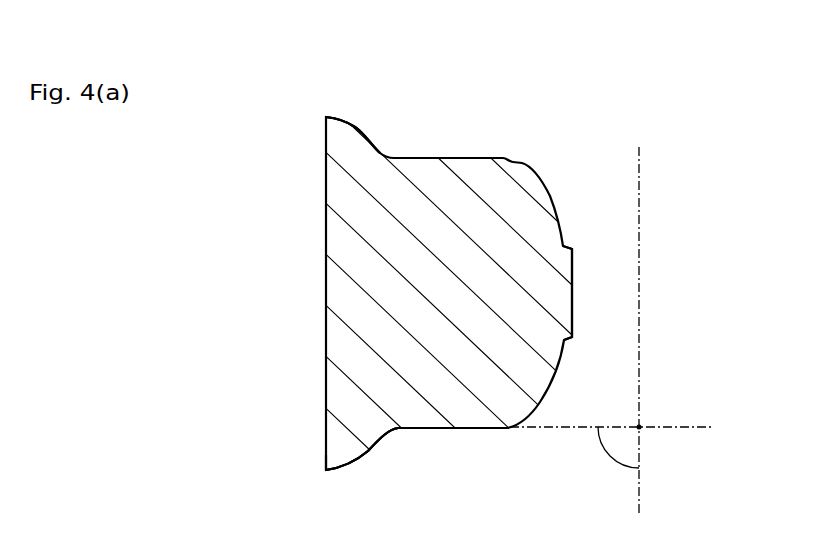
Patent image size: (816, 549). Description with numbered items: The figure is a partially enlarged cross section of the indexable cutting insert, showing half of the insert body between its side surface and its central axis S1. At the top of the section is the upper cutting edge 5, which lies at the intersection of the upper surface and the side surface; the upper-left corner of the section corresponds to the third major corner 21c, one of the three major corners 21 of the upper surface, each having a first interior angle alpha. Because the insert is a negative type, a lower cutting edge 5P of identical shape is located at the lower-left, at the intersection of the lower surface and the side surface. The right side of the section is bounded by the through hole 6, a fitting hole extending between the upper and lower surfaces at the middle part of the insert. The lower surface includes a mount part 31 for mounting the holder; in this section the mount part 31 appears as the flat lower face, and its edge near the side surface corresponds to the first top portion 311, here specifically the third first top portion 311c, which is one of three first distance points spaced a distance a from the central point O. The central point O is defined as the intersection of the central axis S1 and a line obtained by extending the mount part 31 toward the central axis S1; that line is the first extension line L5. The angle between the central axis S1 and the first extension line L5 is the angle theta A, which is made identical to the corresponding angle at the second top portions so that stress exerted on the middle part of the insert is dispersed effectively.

The upper cutting edge 5 is at (326, 118).
The third major corner 21c is at (326, 117).
The major corner 21 is at (353, 135).
The lower cutting edge 5P is at (326, 469).
The through hole 6 is at (575, 300).
The mount part 31 is at (478, 428).
The third first top portion 311c is at (402, 428).
The first top portion 311 is at (362, 449).
The central axis S1 is at (638, 321).
The first extension line L5 is at (680, 427).
The central point O is at (641, 425).